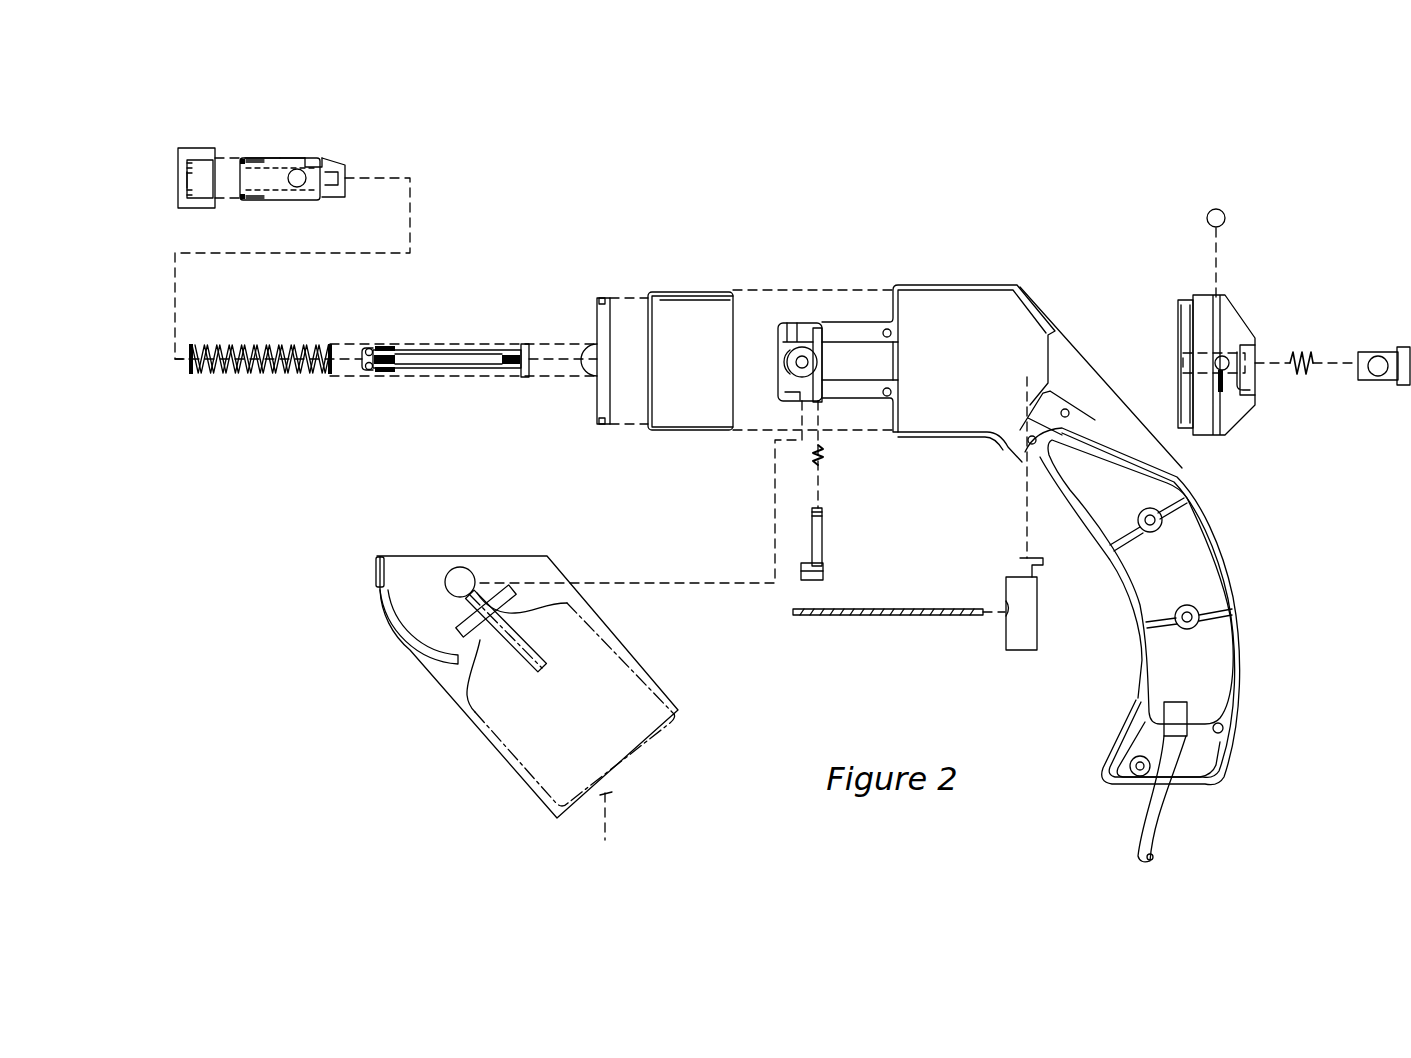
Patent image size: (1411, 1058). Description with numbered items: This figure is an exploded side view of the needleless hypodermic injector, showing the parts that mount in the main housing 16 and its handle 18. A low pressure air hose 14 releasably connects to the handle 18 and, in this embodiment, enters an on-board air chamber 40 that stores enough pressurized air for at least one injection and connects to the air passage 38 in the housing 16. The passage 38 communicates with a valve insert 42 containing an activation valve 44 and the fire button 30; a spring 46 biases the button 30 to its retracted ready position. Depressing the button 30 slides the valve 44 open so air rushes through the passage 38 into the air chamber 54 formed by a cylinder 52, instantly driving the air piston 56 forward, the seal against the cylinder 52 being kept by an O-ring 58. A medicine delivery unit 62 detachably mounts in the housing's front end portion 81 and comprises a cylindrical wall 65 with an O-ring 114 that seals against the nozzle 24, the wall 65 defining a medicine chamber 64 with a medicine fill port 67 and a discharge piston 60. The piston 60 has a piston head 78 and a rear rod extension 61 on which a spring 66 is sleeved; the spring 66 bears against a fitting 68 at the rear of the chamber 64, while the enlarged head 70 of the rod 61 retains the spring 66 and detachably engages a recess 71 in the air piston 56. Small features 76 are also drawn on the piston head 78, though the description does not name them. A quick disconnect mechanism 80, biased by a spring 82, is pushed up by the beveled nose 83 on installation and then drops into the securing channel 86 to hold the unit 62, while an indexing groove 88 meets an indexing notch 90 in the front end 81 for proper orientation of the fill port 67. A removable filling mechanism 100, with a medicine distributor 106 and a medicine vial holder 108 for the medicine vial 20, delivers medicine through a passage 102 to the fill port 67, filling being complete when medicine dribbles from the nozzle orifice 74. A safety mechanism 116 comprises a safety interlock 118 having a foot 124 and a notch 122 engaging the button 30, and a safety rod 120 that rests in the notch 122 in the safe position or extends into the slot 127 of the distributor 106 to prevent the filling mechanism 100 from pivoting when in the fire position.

The air hose 14 is at (1170, 820).
The housing 16 is at (950, 290).
The handle 18 is at (1232, 542).
The medicine vial 20 is at (605, 840).
The nozzle 24 is at (205, 150).
The fire button 30 is at (1393, 347).
The air passage 38 is at (1237, 400).
The on-board air chamber 40 is at (1198, 666).
The valve insert 42 is at (1235, 325).
The activation valve 44 is at (1222, 215).
The spring 46 is at (1303, 375).
The cylinder 52 is at (770, 319).
The air chamber 54 is at (692, 315).
The air piston 56 is at (581, 356).
The O-ring 58 is at (600, 298).
The discharge piston 60 is at (382, 348).
The rear rod extension 61 is at (386, 357).
The medicine delivery unit 62 is at (292, 214).
The medicine chamber 64 is at (257, 172).
The cylindrical wall 65 is at (268, 160).
The spring 66 is at (245, 346).
The medicine fill port 67 is at (297, 188).
The fitting 68 is at (395, 372).
The enlarged head 70 is at (525, 378).
The recess 71 is at (597, 358).
The nozzle orifice 74 is at (183, 178).
The rod fastener holes 76 is at (369, 372).
The piston head 78 is at (365, 350).
The quick disconnect mechanism 80 is at (822, 563).
The front end portion 81 is at (792, 328).
The spring 82 is at (822, 455).
The beveled nose 83 is at (340, 161).
The securing channel 86 is at (313, 160).
The indexing groove 88 is at (292, 158).
The indexing notch 90 is at (680, 406).
The medicine chamber filling mechanism 100 is at (478, 692).
The passage 102 is at (808, 360).
The medicine distributor 106 is at (456, 574).
The medicine vial holder 108 is at (455, 688).
The O-ring 114 is at (242, 200).
The safety mechanism 116 is at (996, 616).
The safety interlock 118 is at (1025, 650).
The safety rod 120 is at (852, 616).
The notch 122 is at (1003, 612).
The foot 124 is at (1025, 565).
The slot 127 is at (475, 586).